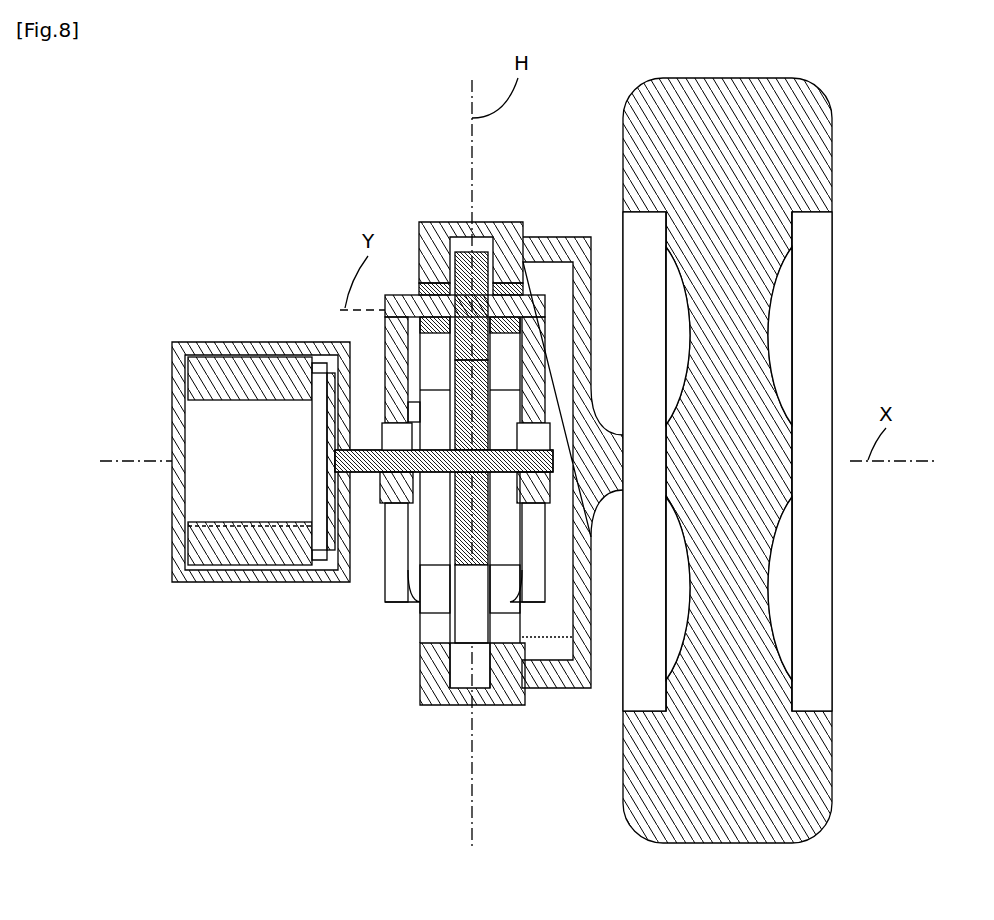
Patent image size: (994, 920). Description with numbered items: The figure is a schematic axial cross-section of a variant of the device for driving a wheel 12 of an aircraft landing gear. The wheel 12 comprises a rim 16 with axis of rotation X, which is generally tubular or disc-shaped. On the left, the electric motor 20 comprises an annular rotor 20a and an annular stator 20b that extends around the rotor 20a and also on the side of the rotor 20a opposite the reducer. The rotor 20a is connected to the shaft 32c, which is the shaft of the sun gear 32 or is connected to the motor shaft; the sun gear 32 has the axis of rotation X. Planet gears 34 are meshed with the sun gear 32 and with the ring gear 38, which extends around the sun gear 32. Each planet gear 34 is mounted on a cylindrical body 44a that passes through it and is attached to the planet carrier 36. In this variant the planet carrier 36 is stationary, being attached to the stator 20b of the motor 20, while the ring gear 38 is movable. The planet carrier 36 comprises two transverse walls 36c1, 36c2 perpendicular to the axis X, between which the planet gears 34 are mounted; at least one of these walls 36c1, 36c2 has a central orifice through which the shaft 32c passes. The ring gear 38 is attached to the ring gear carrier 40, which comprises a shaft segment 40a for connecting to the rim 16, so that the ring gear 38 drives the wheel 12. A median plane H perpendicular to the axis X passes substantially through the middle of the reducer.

The wheel 12 is at (760, 499).
The rim 16 is at (833, 697).
The motor 20 is at (261, 476).
The rotor 20a is at (285, 555).
The stator 20b is at (262, 342).
The sun gear 32 is at (473, 547).
The shaft 32c is at (377, 473).
The planet gears 34 is at (472, 250).
The planet carrier 36 is at (448, 477).
The transverse wall 36c1 is at (398, 355).
The transverse wall 36c2 is at (561, 298).
The ring gear 38 is at (507, 708).
The ring gear carrier 40 is at (572, 507).
The shaft segment 40a is at (615, 490).
The cylindrical body 44a is at (410, 303).